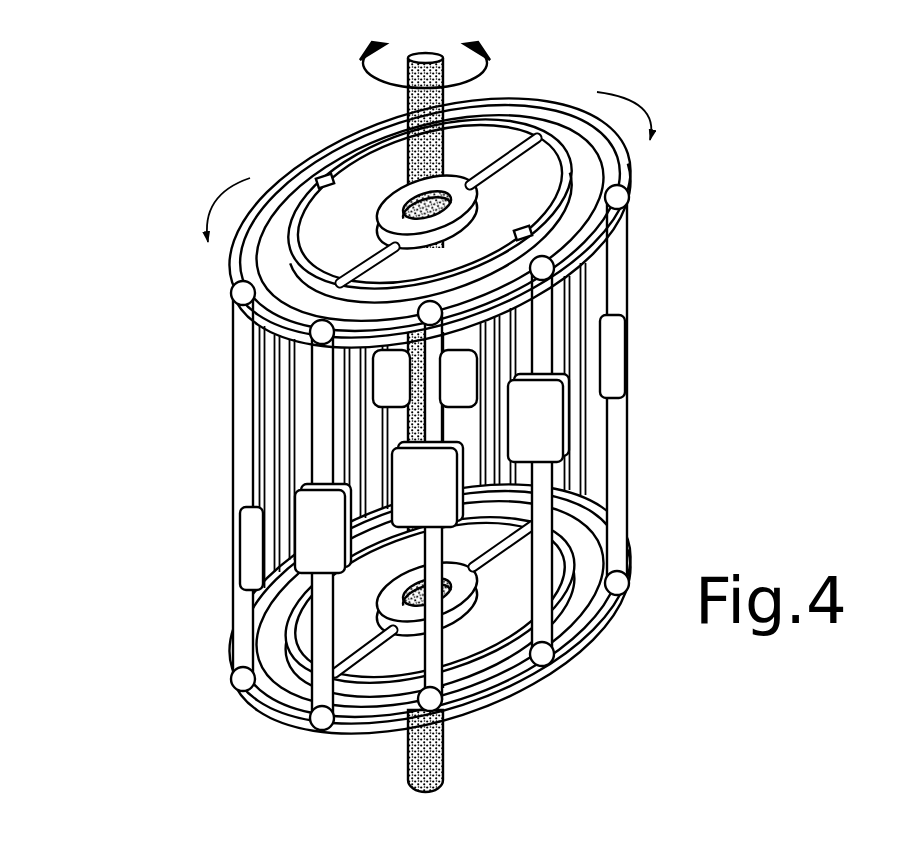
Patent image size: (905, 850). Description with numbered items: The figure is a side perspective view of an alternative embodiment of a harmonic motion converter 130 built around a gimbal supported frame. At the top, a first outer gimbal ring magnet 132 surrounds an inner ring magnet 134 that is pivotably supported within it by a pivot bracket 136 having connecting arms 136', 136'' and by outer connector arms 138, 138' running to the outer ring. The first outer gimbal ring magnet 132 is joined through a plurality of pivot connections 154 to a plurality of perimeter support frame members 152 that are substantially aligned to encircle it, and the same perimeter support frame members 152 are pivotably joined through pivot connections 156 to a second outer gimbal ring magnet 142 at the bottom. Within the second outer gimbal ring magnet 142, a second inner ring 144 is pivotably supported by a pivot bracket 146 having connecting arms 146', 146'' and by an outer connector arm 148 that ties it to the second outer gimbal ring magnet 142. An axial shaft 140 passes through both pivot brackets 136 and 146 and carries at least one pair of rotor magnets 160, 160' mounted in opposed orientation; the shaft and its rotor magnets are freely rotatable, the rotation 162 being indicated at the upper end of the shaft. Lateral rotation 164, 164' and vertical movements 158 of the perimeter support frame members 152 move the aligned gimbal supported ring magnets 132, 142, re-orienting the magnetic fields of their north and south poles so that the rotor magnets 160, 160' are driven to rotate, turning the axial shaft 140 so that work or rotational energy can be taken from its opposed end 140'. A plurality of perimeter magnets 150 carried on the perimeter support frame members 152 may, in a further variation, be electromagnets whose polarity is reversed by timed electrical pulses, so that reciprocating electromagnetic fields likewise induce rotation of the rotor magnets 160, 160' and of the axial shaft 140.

The harmonic motion converter 130 is at (110, 200).
The first outer gimbal ring magnet 132 is at (613, 168).
The inner ring magnet 134 is at (552, 112).
The pivot bracket 136 is at (451, 212).
The connecting arm 136' is at (490, 161).
The connecting arm 136'' is at (355, 255).
The outer connector arm 138 is at (477, 395).
The outer connector arm 138' is at (390, 174).
The axial shaft 140 is at (370, 252).
The opposed end of the axial shaft 140' is at (471, 661).
The second outer gimbal ring magnet 142 is at (583, 613).
The second inner ring 144 is at (300, 714).
The pivot bracket 146 is at (402, 452).
The connecting arm 146' is at (452, 586).
The connecting arm 146'' is at (369, 695).
The outer connector arm 148 is at (510, 655).
The perimeter magnets 150 is at (664, 350).
The perimeter support frame members 152 is at (662, 432).
The pivot connections 154 is at (232, 290).
The pivot connections 156 is at (215, 690).
The vertical movements 158 is at (205, 578).
The rotor magnet 160 is at (293, 378).
The rotor magnet 160' is at (560, 340).
The rotation 162 is at (488, 64).
The lateral rotation 164 is at (205, 191).
The lateral rotation 164' is at (647, 98).